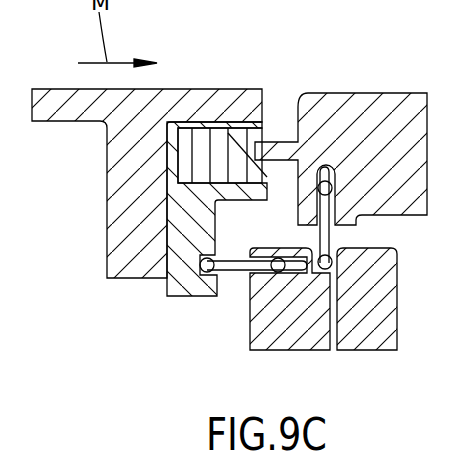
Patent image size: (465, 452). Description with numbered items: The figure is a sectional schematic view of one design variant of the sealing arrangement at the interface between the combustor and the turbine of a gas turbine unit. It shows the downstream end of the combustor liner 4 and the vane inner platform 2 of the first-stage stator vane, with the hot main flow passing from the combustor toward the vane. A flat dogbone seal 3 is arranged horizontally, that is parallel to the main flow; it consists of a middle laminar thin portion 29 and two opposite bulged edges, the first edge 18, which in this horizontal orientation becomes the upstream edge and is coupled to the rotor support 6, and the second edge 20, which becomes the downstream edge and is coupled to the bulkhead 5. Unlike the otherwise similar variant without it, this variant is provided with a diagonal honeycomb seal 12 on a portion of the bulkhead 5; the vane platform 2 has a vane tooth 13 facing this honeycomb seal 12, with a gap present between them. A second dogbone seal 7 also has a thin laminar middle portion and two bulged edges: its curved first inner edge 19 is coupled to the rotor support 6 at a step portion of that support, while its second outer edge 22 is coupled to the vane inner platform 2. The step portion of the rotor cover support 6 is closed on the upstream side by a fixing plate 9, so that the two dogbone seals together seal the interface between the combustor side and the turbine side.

The vane inner platform 2 is at (342, 110).
The flat dogbone seal 3 is at (222, 242).
The combustor liner 4 is at (63, 102).
The bulkhead 5 is at (203, 190).
The rotor support 6 is at (279, 332).
The second dogbone seal 7 is at (352, 237).
The fixing plate 9 is at (387, 308).
The diagonal honeycomb seal 12 is at (185, 141).
The vane tooth 13 is at (274, 143).
The first edge 18 is at (204, 271).
The first inner edge 19 is at (338, 266).
The second edge 20 is at (280, 278).
The second outer edge 22 is at (335, 188).
The middle laminar thin portion 29 is at (236, 268).